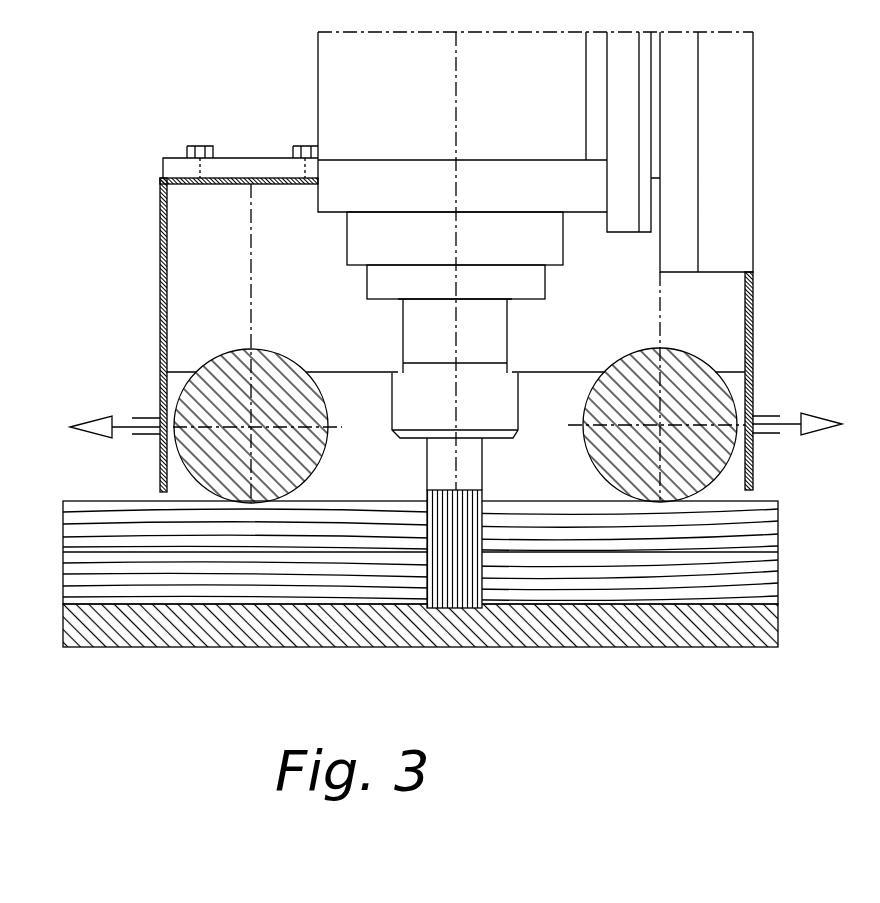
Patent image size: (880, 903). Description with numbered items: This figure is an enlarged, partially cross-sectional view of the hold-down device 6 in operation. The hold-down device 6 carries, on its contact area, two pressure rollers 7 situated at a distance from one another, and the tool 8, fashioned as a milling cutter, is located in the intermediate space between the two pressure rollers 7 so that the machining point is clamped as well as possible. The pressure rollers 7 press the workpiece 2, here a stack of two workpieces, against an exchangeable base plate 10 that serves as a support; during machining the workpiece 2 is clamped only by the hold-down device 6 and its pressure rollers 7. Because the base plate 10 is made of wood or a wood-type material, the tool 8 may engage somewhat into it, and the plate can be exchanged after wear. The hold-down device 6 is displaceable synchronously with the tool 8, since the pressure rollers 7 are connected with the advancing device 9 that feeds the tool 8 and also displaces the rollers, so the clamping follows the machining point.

The workpiece 2 is at (760, 527).
The hold-down device 6 is at (157, 321).
The pressure rollers 7 is at (265, 365).
The tool 8 is at (465, 568).
The advancing device 9 is at (123, 427).
The base plate 10 is at (718, 627).